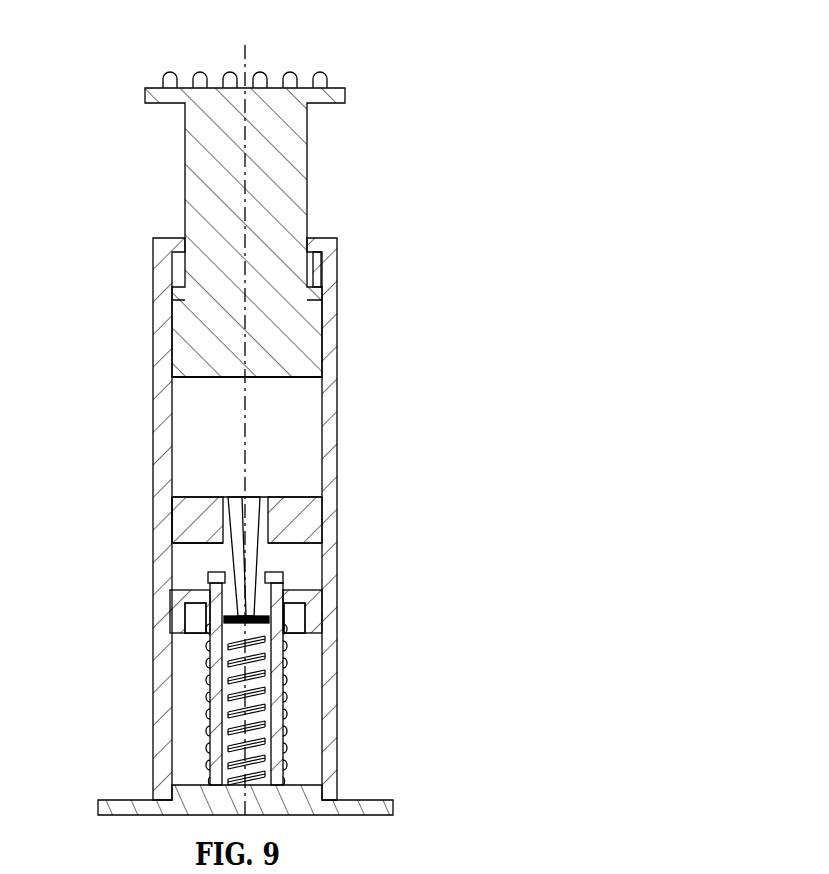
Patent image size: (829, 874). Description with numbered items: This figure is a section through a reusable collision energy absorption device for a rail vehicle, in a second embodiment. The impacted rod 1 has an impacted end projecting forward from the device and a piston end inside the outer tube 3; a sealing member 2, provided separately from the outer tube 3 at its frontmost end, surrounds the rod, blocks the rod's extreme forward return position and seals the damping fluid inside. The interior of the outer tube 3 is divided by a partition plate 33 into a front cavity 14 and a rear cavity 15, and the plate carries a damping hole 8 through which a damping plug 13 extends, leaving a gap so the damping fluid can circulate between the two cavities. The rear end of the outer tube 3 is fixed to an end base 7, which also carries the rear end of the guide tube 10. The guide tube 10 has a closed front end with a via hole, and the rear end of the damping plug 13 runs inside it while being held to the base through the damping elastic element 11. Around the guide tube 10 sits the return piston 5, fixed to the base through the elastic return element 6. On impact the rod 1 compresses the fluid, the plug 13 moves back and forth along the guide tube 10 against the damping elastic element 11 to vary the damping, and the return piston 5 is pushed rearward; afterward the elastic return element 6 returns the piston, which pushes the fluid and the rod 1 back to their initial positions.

The impacted rod 1 is at (283, 148).
The sealing member 2 is at (327, 238).
The outer tube 3 is at (270, 380).
The return piston 5 is at (305, 630).
The elastic return element 6 is at (207, 660).
The base plate 7 is at (370, 808).
The guide block 8 is at (283, 537).
The guide tube 10 is at (283, 590).
The damping elastic element 11 is at (228, 755).
The tapered pin 13 is at (270, 497).
The upper cavity 14 is at (192, 437).
The lower cavity 15 is at (182, 568).
The shoulder 33 is at (173, 512).